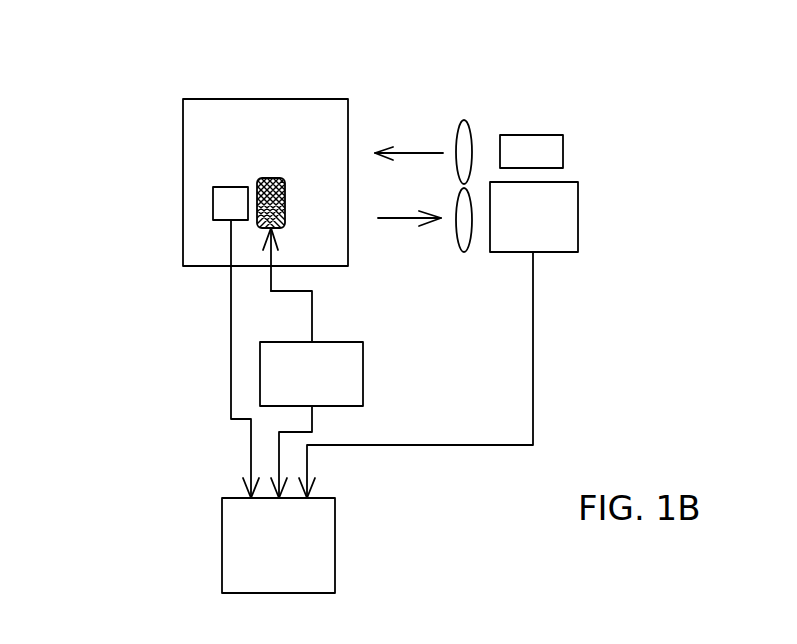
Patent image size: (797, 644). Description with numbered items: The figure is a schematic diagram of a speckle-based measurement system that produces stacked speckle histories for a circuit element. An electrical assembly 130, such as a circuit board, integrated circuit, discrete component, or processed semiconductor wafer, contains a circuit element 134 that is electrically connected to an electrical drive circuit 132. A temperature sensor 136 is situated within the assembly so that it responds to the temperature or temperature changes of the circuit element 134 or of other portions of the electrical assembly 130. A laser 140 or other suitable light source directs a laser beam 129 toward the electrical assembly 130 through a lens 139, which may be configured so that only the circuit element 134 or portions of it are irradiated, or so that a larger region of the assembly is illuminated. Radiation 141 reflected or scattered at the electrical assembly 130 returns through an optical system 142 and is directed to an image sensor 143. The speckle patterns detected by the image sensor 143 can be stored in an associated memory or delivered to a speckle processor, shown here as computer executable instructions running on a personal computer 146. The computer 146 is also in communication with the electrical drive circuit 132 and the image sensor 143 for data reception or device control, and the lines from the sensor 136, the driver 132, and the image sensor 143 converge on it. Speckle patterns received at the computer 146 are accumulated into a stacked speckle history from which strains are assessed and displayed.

The laser beam 129 is at (420, 153).
The electrical assembly 130 is at (183, 263).
The electrical drive circuit 132 is at (335, 342).
The circuit element 134 is at (268, 178).
The temperature sensor 136 is at (215, 213).
The lens 139 is at (465, 120).
The laser 140 is at (532, 135).
The radiation 141 is at (405, 218).
The optical system 142 is at (463, 252).
The image sensor 143 is at (578, 217).
The personal computer 146 is at (335, 545).